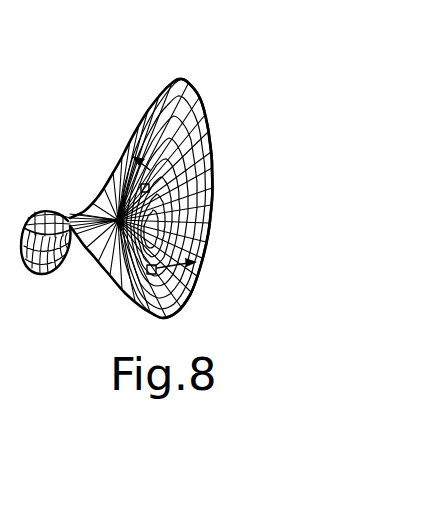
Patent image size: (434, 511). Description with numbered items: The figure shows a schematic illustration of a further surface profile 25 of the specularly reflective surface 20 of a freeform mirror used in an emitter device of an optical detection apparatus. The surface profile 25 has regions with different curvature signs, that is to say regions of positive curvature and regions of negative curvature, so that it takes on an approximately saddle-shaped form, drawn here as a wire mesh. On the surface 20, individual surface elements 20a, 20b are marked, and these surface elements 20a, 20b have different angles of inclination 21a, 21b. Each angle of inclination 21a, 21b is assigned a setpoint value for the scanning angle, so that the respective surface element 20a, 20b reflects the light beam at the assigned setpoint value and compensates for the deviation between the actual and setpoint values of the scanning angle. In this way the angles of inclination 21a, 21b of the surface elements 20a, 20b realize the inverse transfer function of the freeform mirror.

The specularly reflective surface 20 is at (235, 82).
The surface element 20a is at (150, 188).
The surface element 20b is at (146, 272).
The angle of inclination 21a is at (150, 170).
The angle of inclination 21b is at (180, 270).
The surface profile 25 is at (210, 223).